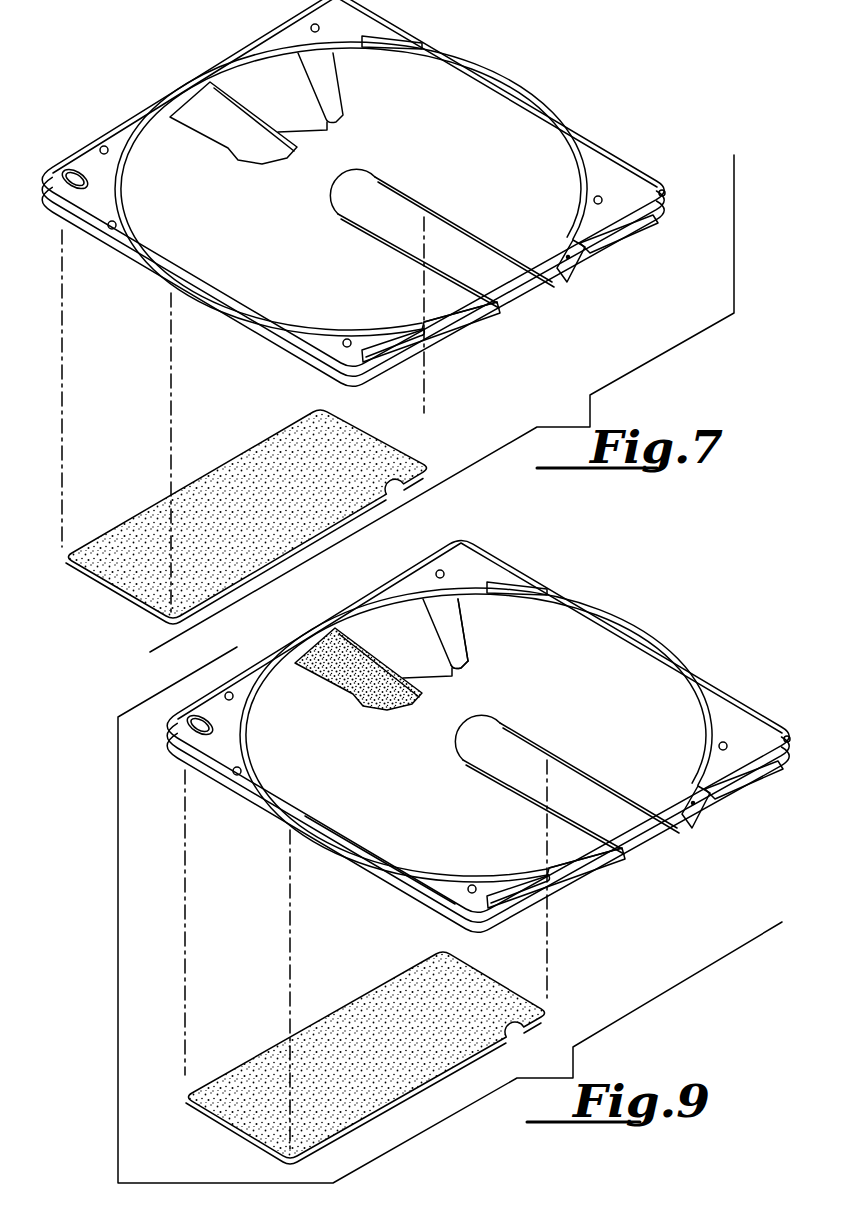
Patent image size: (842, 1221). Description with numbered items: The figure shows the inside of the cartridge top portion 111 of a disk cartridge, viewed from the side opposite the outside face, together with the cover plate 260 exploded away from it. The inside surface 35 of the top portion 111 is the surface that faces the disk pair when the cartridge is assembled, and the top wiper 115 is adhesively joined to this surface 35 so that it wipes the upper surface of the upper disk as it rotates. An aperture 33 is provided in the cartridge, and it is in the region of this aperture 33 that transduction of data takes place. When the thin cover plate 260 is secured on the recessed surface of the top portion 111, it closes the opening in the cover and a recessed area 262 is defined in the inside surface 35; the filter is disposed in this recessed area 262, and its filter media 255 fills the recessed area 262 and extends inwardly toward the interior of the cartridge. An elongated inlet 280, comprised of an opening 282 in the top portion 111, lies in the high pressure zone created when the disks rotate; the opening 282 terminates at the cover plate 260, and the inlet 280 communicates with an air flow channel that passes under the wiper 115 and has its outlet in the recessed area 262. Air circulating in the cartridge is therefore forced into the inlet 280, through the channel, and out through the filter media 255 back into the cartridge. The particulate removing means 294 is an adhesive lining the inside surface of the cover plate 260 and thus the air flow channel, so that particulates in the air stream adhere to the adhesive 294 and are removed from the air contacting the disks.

In FIG. 7, the aperture 33 is at (519, 293).
In FIG. 9, the aperture 33 is at (647, 838).
In FIG. 7, the inside surface 35 is at (286, 257).
In FIG. 9, the inside surface 35 is at (440, 825).
In FIG. 9, the cartridge top portion 111 is at (357, 862).
In FIG. 7, the top wiper 115 is at (333, 137).
In FIG. 9, the top wiper 115 is at (452, 682).
In FIG. 9, the filter media 255 is at (408, 708).
In FIG. 7, the cover plate 260 is at (243, 455).
In FIG. 9, the cover plate 260 is at (347, 1002).
In FIG. 7, the recessed area 262 is at (229, 150).
In FIG. 9, the recessed area 262 is at (340, 682).
In FIG. 9, the inlet 280 is at (458, 613).
In FIG. 9, the opening 282 is at (457, 653).
In FIG. 7, the adhesive lining 294 is at (146, 538).
In FIG. 9, the adhesive lining 294 is at (260, 1080).